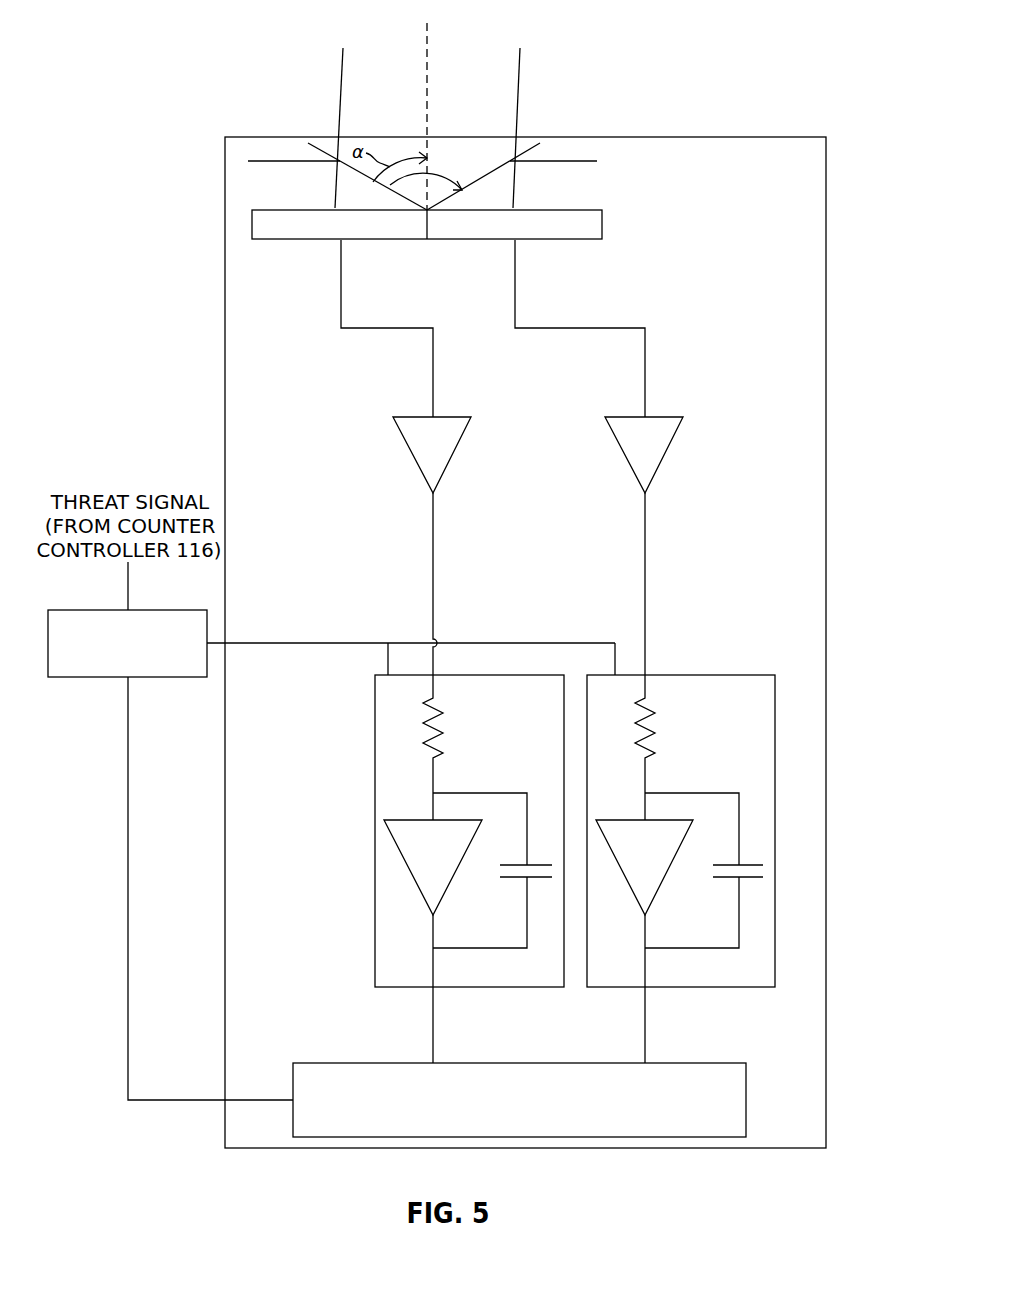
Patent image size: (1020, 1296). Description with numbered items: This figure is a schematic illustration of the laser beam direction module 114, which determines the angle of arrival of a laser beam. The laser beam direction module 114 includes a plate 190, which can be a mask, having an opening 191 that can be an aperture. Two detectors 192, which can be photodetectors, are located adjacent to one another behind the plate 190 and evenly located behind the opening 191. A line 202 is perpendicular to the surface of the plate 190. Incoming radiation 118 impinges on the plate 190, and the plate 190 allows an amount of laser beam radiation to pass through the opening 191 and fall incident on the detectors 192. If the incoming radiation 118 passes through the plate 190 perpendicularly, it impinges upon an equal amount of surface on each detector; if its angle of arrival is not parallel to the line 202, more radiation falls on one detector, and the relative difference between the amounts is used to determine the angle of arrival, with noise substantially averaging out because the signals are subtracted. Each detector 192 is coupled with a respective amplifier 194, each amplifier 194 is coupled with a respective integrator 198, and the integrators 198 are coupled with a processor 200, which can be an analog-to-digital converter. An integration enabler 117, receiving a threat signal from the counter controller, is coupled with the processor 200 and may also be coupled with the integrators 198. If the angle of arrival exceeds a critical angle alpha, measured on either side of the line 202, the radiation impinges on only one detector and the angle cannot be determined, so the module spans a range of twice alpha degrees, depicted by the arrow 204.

The laser beam direction module 114 is at (720, 137).
The integration enabler 117 is at (175, 677).
The incoming radiation 118 is at (520, 60).
The plate 190 is at (285, 161).
The opening 191 is at (468, 160).
The detectors 192 is at (268, 239).
The amplifiers 194 is at (403, 436).
The integrators 198 is at (375, 747).
The processor 200 is at (746, 1097).
The line 202 is at (425, 73).
The arrow 204 is at (412, 178).